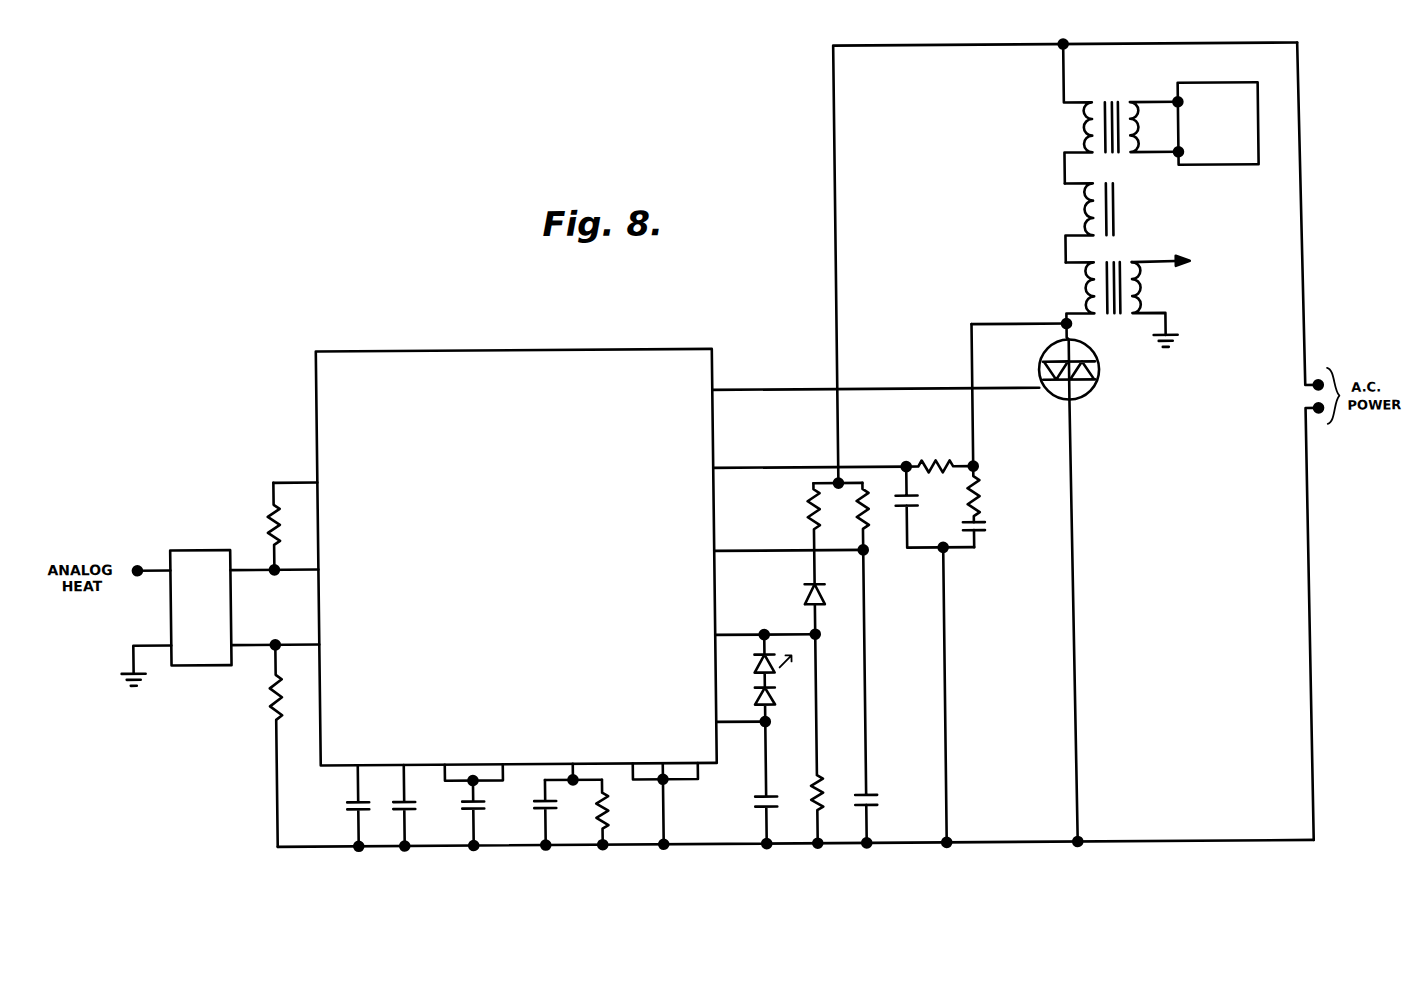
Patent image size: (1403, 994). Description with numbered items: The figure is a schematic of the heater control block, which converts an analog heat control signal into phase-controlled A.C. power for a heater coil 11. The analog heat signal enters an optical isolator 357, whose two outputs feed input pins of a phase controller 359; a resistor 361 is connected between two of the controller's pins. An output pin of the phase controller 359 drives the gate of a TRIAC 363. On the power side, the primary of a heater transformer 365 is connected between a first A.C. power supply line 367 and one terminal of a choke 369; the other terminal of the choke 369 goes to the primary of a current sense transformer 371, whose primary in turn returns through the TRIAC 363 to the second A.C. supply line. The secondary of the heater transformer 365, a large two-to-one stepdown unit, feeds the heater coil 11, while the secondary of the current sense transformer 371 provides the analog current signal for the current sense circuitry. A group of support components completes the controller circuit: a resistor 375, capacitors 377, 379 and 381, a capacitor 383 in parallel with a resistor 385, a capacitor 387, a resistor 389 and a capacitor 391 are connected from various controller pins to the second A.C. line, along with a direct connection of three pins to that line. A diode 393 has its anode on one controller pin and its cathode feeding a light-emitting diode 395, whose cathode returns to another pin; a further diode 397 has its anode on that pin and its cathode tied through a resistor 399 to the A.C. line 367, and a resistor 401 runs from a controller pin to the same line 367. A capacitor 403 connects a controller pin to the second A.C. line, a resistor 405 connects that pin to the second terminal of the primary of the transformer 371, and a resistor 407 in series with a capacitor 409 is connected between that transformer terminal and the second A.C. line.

The heater coil 11 is at (1262, 110).
The optical isolator 357 is at (186, 547).
The phase controller 359 is at (317, 352).
The resistor 361 is at (268, 512).
The TRIAC 363 is at (1098, 388).
The heater transformer 365 is at (1086, 105).
The first A.C. power supply line 367 is at (948, 47).
The choke 369 is at (1085, 186).
The current sense transformer 371 is at (1085, 265).
The resistor 375 is at (270, 694).
The capacitor 377 is at (344, 800).
The capacitor 379 is at (398, 815).
The capacitor 381 is at (468, 815).
The capacitor 383 is at (540, 815).
The resistor 385 is at (604, 826).
The capacitor 387 is at (762, 812).
The resistor 389 is at (815, 812).
The capacitor 391 is at (866, 812).
The diode 393 is at (772, 701).
The light-emitting diode 395 is at (772, 669).
The diode 397 is at (826, 597).
The resistor 399 is at (808, 510).
The resistor 401 is at (864, 498).
The capacitor 403 is at (904, 515).
The resistor 405 is at (936, 465).
The resistor 407 is at (980, 488).
The capacitor 409 is at (978, 534).